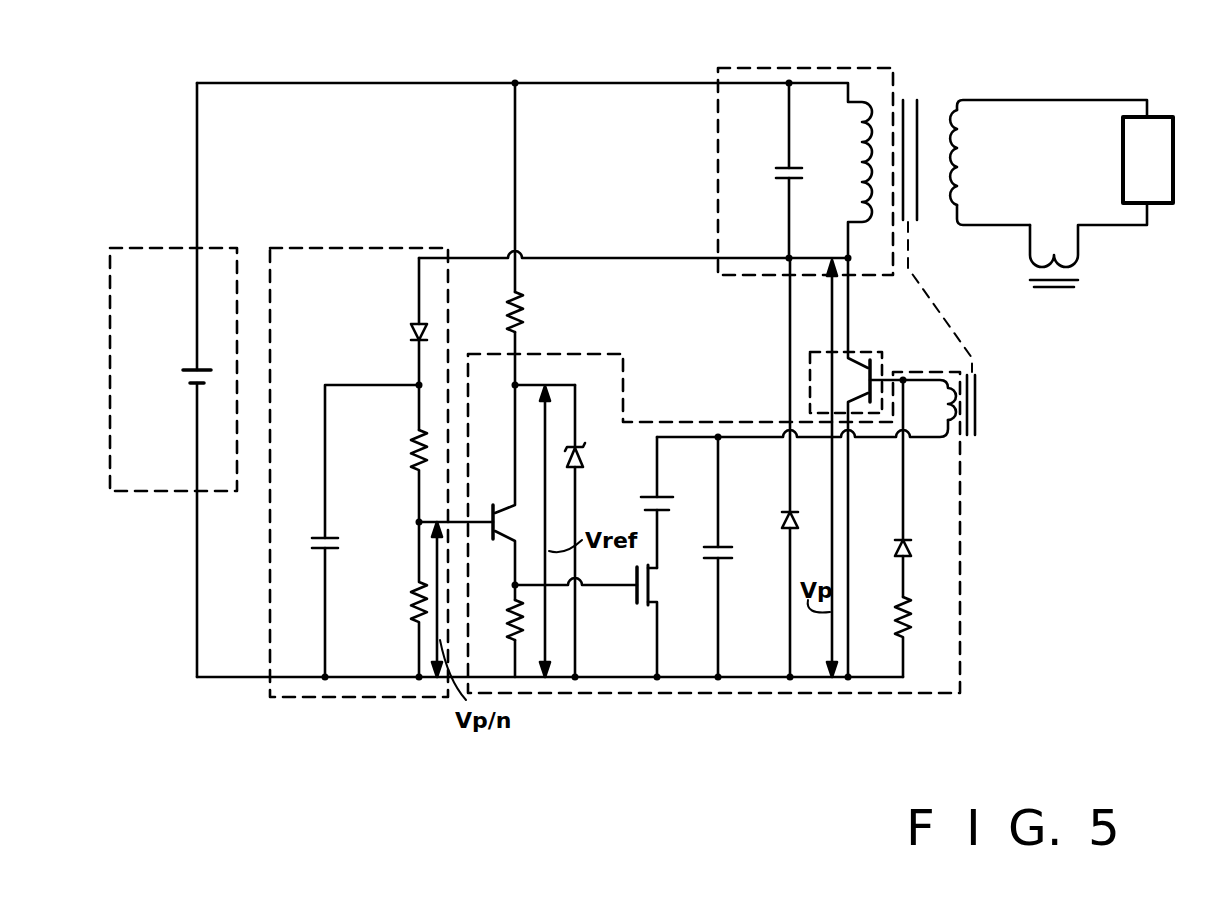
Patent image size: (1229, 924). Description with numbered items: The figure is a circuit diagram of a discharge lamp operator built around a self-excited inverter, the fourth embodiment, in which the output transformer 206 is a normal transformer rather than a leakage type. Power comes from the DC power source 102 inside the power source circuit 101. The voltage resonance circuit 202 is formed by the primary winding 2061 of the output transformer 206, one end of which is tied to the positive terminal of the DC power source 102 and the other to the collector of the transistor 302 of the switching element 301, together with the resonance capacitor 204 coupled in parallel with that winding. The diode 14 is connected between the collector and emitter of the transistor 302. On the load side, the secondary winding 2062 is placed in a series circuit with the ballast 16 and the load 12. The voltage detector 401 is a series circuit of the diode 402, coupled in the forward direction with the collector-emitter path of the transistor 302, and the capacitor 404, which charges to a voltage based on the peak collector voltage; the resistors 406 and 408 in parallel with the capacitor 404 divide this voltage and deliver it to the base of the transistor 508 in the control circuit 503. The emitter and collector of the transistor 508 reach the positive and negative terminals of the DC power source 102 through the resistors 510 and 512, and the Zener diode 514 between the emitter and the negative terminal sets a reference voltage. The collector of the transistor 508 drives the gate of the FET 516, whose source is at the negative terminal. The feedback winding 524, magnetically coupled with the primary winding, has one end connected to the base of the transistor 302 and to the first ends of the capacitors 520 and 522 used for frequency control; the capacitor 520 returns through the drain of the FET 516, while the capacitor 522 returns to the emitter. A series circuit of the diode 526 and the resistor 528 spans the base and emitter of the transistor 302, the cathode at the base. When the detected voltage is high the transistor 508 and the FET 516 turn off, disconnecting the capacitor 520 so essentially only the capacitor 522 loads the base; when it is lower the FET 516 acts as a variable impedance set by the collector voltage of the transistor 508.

The load 12 is at (1175, 140).
The diode 14 is at (800, 520).
The ballast 16 is at (1060, 252).
The power source circuit 101 is at (150, 491).
The DC power source 102 is at (188, 368).
The voltage resonance circuit 202 is at (788, 68).
The resonance capacitor 204 is at (780, 170).
The output transformer 206 is at (921, 100).
The primary winding 2061 is at (858, 180).
The secondary winding 2062 is at (962, 165).
The switching element 301 is at (862, 352).
The transistor 302 is at (868, 380).
The voltage detector 401 is at (403, 697).
The diode 402 is at (410, 331).
The capacitor 404 is at (340, 546).
The resistor 406 is at (411, 452).
The resistor 408 is at (414, 608).
The control circuit 503 is at (763, 693).
The transistor 508 is at (490, 517).
The resistor 510 is at (522, 314).
The resistor 512 is at (510, 620).
The Zener diode 514 is at (583, 456).
The FET 516 is at (668, 583).
The capacitor 520 is at (693, 498).
The capacitor 522 is at (733, 555).
The feedback winding 524 is at (976, 440).
The diode 526 is at (915, 548).
The resistor 528 is at (915, 620).